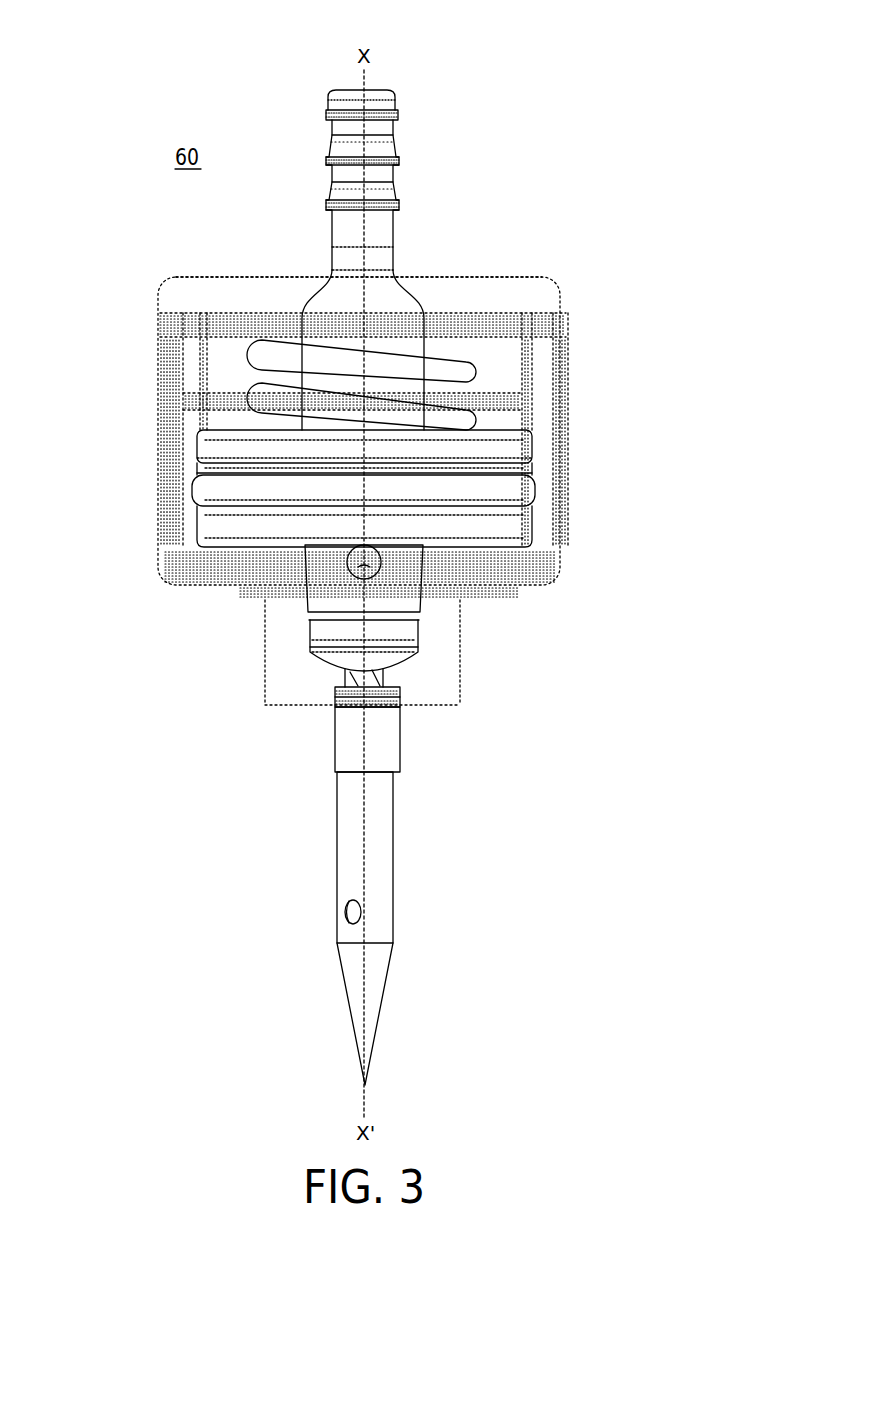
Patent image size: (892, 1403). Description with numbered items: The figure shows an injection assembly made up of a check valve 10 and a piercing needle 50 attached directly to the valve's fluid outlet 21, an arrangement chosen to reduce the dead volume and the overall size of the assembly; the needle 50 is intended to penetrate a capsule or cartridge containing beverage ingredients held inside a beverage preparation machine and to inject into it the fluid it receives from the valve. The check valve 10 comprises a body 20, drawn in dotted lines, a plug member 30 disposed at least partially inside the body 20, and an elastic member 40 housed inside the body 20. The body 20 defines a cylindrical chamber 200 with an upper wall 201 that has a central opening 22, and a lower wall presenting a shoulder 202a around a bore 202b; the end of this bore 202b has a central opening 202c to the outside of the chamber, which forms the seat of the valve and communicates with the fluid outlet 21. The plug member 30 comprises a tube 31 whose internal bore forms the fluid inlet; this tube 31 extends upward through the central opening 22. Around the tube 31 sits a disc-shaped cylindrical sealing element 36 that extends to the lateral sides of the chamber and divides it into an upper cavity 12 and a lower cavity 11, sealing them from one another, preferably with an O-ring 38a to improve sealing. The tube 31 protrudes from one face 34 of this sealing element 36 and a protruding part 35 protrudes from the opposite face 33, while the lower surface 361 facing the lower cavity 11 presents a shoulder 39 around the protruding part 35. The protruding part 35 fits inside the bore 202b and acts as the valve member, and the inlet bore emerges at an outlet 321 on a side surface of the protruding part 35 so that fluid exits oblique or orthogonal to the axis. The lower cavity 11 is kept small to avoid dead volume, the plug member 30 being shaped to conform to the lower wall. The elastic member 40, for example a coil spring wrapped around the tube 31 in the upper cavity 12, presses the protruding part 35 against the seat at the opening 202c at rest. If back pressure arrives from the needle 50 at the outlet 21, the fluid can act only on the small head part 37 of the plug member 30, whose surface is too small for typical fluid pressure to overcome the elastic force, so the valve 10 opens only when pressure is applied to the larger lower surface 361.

The check valve 10 is at (578, 418).
The lower cavity 11 is at (240, 565).
The upper cavity 12 is at (532, 425).
The body 20 is at (147, 463).
The fluid outlet 21 is at (345, 675).
The central opening 22 is at (398, 278).
The plug member 30 is at (356, 509).
The tube 31 is at (338, 152).
The opposite face 33 is at (530, 525).
The face 34 is at (212, 432).
The protruding part 35 is at (410, 632).
The middle flange 36 is at (532, 462).
The head part 37 is at (400, 665).
The O-ring 38a is at (205, 495).
The shoulder 39 is at (305, 553).
The elastic member 40 is at (465, 425).
The piercing needle 50 is at (350, 985).
The cylindrical chamber 200 is at (505, 345).
The upper wall 201 is at (520, 277).
The shoulder 202a is at (470, 584).
The bore 202b is at (420, 618).
The central opening 202c is at (397, 697).
The outlet 321 is at (380, 573).
The lower body edge 361 is at (230, 560).